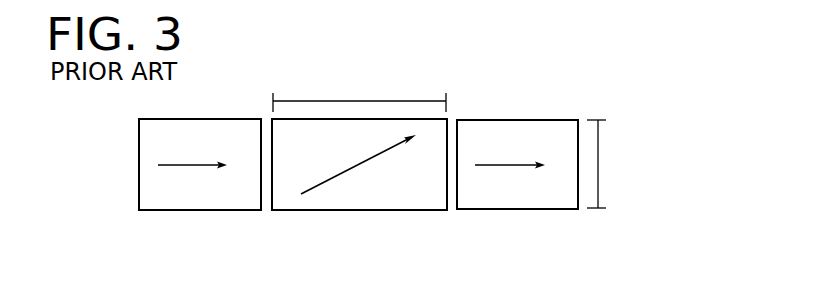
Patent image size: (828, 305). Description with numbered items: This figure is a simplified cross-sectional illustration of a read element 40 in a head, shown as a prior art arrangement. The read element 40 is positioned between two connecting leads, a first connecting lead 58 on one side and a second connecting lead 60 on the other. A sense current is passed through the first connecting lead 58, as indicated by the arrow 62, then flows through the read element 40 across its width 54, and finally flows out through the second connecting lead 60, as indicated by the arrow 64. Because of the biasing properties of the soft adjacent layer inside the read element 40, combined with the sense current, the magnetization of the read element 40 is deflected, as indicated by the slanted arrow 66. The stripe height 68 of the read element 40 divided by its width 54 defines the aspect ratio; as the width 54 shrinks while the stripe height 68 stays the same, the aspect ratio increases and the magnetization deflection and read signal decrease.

The read element 40 is at (359, 212).
The width 54 is at (394, 101).
The first connecting lead 58 is at (197, 210).
The second connecting lead 60 is at (525, 211).
The arrow 62 is at (175, 165).
The arrow 64 is at (503, 165).
The arrow 66 is at (335, 177).
The stripe height 68 is at (598, 160).